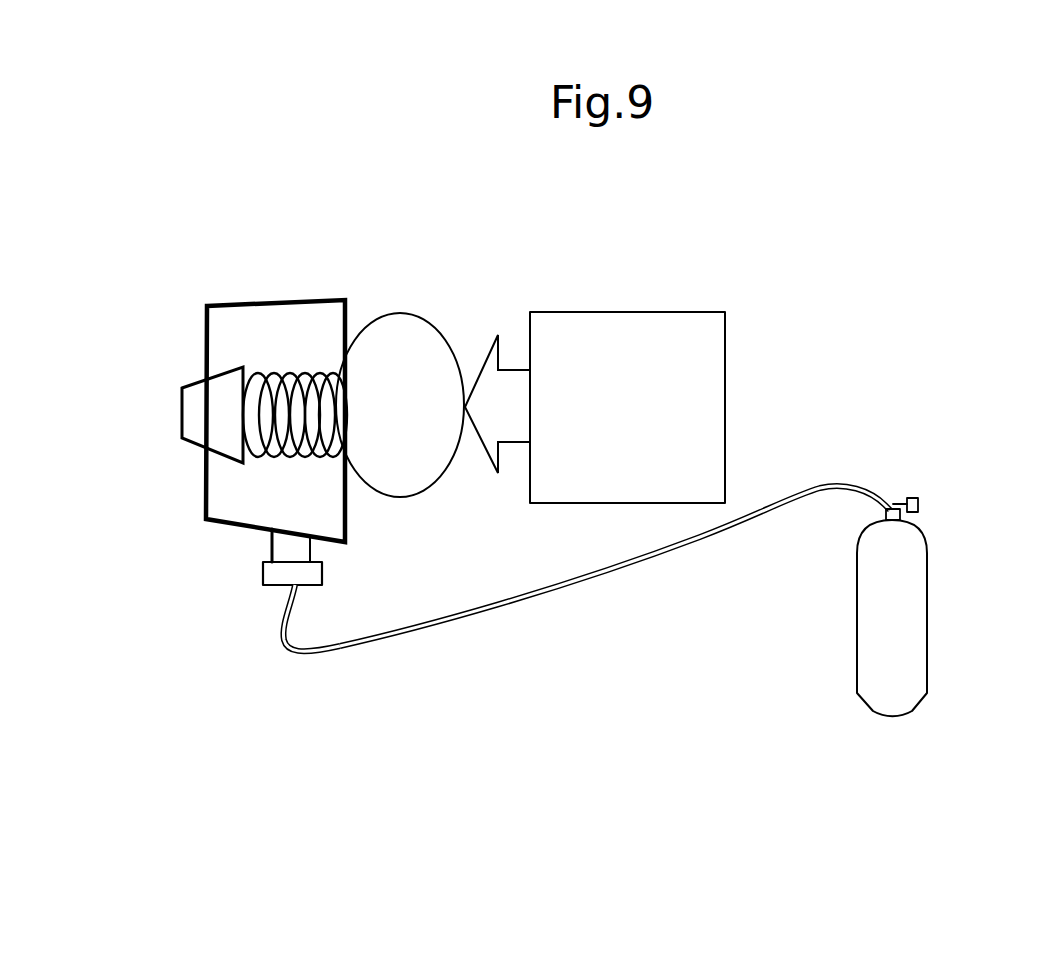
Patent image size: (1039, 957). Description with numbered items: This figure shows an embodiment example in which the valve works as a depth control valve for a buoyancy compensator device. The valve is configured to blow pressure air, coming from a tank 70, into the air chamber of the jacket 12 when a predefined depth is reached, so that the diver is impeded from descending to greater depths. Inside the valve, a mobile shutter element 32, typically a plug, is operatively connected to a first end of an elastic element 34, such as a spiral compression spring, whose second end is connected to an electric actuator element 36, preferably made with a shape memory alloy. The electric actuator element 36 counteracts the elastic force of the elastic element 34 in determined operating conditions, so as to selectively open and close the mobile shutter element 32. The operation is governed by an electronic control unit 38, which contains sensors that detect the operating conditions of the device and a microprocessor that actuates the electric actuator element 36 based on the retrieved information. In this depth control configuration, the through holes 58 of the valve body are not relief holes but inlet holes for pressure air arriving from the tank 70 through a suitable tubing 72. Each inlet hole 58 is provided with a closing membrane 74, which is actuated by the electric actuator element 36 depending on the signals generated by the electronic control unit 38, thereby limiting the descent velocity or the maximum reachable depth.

The jacket 12 is at (202, 510).
The mobile shutter element 32 is at (192, 382).
The elastic element 34 is at (285, 377).
The electric actuator element 36 is at (410, 333).
The electronic control unit 38 is at (663, 323).
The through holes 58 is at (263, 550).
The tank 70 is at (912, 553).
The tubing 72 is at (762, 517).
The closing membrane 74 is at (312, 590).